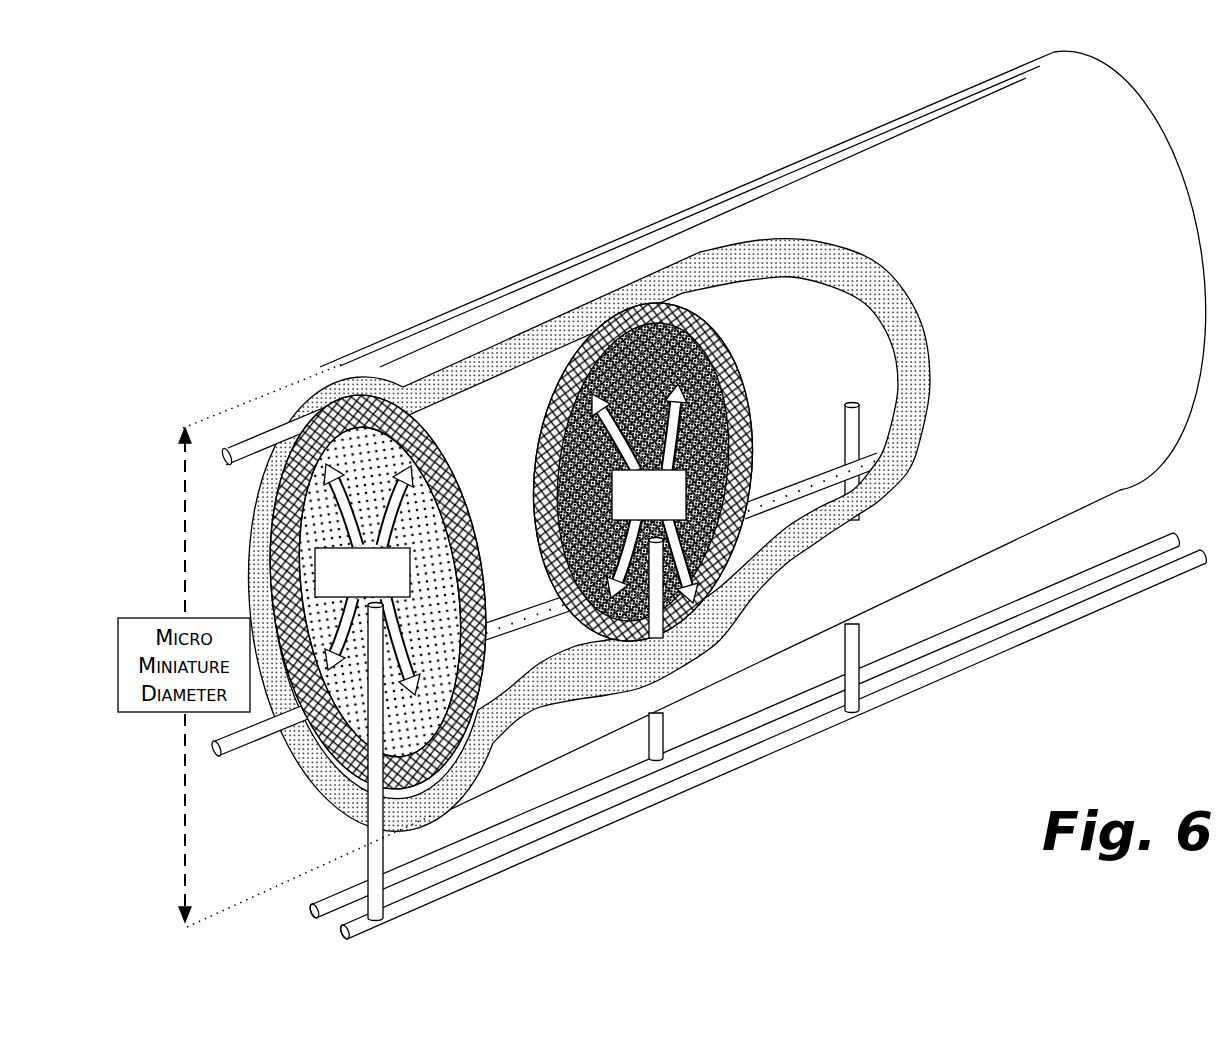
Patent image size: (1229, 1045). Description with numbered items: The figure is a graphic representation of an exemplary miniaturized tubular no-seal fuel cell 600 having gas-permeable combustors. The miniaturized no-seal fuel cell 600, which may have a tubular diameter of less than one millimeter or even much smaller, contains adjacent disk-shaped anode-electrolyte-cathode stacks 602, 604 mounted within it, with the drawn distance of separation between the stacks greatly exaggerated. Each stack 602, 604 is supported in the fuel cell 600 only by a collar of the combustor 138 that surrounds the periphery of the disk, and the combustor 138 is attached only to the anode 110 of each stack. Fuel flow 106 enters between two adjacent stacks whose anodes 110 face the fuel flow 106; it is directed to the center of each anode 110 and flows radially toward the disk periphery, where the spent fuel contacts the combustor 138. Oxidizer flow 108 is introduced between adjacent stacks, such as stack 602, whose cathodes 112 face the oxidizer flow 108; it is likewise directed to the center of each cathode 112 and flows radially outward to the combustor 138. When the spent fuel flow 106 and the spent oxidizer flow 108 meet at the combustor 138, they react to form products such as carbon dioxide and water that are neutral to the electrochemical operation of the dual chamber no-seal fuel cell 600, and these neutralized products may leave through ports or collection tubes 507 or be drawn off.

The miniaturized no-seal fuel cell 600 is at (526, 156).
The anode 110 is at (607, 376).
The combustor 138 is at (430, 450).
The anode-electrolyte-cathode stack 604 is at (748, 395).
The anode-electrolyte-cathode stack 602 is at (493, 574).
The cathode 112 is at (307, 540).
The collection tubes 507 is at (300, 430).
The fuel flow 106 is at (737, 727).
The oxidizer flow 108 is at (607, 820).